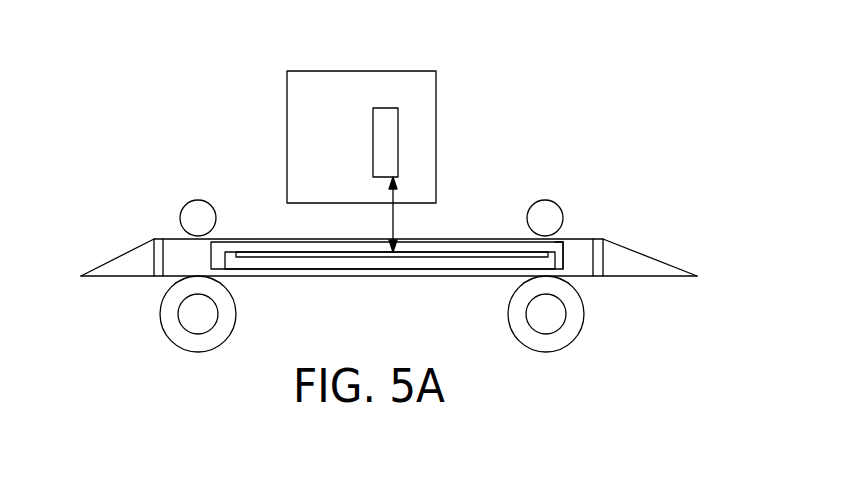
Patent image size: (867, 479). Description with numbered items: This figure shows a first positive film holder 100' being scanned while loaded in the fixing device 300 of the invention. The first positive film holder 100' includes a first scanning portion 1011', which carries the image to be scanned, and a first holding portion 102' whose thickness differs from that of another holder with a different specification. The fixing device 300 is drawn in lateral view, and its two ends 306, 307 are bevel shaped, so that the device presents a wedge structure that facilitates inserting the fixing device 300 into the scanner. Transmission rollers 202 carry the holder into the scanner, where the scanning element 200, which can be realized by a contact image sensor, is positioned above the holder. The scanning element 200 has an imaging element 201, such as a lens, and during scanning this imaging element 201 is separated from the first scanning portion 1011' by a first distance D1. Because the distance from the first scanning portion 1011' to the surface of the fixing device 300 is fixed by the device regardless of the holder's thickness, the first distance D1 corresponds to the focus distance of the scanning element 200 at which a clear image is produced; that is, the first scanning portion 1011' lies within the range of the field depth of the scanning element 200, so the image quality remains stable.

The fixing device 300 is at (167, 238).
The end of fixing device 306 is at (140, 250).
The end of fixing device 307 is at (638, 257).
The first positive film holder 100' is at (364, 191).
The first holding portion 102' is at (616, 216).
The first scanning portion 1011' is at (420, 203).
The scanning element 200 is at (294, 71).
The imaging element 201 is at (392, 147).
The transmission rollers 202 is at (572, 323).
The first distance D1 is at (395, 220).